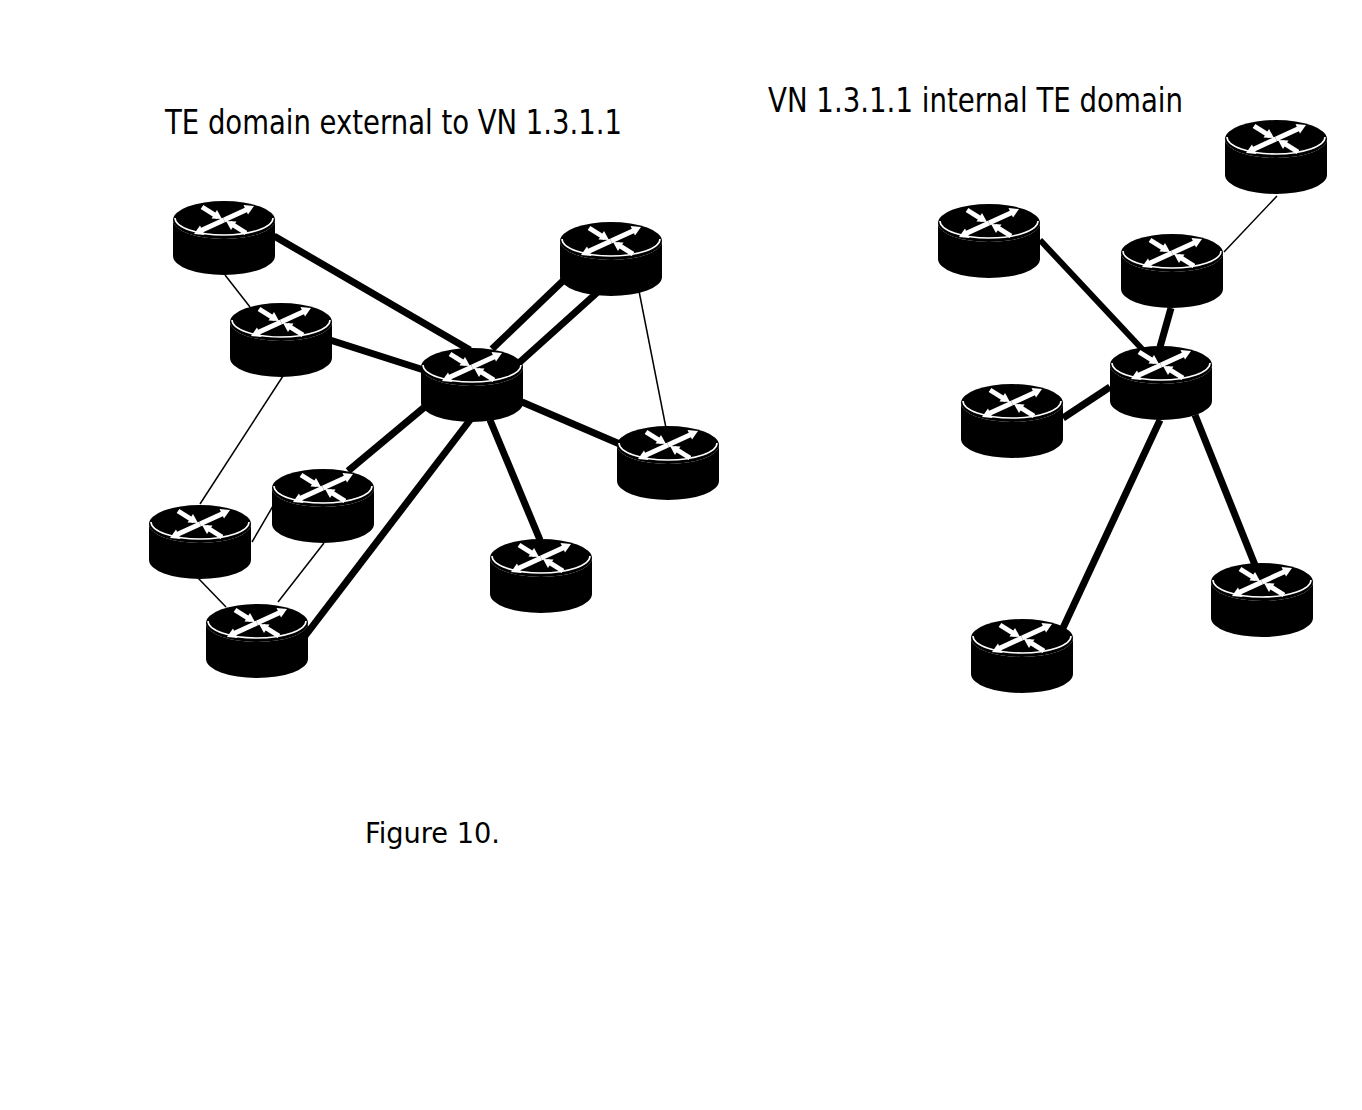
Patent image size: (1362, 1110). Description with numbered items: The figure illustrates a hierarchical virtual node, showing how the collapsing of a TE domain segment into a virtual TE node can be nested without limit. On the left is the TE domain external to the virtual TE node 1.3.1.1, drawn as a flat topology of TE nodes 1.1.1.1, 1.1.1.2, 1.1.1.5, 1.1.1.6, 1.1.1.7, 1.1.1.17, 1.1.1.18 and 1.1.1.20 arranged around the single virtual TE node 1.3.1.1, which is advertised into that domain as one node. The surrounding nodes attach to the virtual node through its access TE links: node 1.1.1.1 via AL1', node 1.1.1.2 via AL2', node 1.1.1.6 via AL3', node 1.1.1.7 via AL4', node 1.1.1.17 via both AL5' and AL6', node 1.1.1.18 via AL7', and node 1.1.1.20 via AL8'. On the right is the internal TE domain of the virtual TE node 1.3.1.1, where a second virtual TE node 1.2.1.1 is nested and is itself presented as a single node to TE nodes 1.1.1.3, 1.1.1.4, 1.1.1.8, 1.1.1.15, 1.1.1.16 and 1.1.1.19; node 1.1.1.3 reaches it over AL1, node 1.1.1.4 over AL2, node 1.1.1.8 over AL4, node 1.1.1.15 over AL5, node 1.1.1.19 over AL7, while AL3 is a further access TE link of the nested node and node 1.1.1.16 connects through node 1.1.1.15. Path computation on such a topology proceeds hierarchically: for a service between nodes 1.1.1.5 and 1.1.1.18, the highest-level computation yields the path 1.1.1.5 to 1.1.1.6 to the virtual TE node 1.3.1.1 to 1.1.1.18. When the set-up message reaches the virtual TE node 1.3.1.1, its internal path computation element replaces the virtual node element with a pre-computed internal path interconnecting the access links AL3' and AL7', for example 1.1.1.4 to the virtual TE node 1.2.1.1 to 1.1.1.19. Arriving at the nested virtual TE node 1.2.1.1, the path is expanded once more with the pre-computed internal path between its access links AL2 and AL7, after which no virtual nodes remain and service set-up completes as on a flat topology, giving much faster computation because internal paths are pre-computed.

The TE node 1.1.1.1 is at (224, 219).
The TE node 1.1.1.2 is at (281, 329).
The TE node 1.1.1.5 is at (200, 521).
The TE node 1.1.1.6 is at (323, 487).
The TE node 1.1.1.7 is at (257, 629).
The TE node 1.1.1.17 is at (632, 248).
The TE node 1.1.1.18 is at (672, 452).
The TE node 1.1.1.20 is at (563, 562).
The virtual TE node 1.3.1.1 is at (505, 385).
The access TE link AL1' is at (372, 293).
The access TE link AL2' is at (380, 352).
The access TE link AL3' is at (390, 435).
The access TE link AL4' is at (387, 528).
The access TE link AL5' is at (518, 313).
The access TE link AL6' is at (585, 326).
The access TE link AL7' is at (572, 437).
The access TE link AL8' is at (493, 480).
The TE node 1.1.1.3 is at (989, 221).
The TE node 1.1.1.4 is at (1012, 409).
The TE node 1.1.1.8 is at (1022, 644).
The TE node 1.1.1.15 is at (1216, 271).
The TE node 1.1.1.16 is at (1276, 144).
The TE node 1.1.1.19 is at (1275, 587).
The virtual TE node 1.2.1.1 is at (1193, 383).
The access TE link AL1 is at (1091, 293).
The access TE link AL2 is at (1082, 389).
The access TE link AL3 is at (1057, 464).
The access TE link AL4 is at (1107, 524).
The access TE link AL5 is at (1190, 330).
The access TE link AL7 is at (1239, 490).